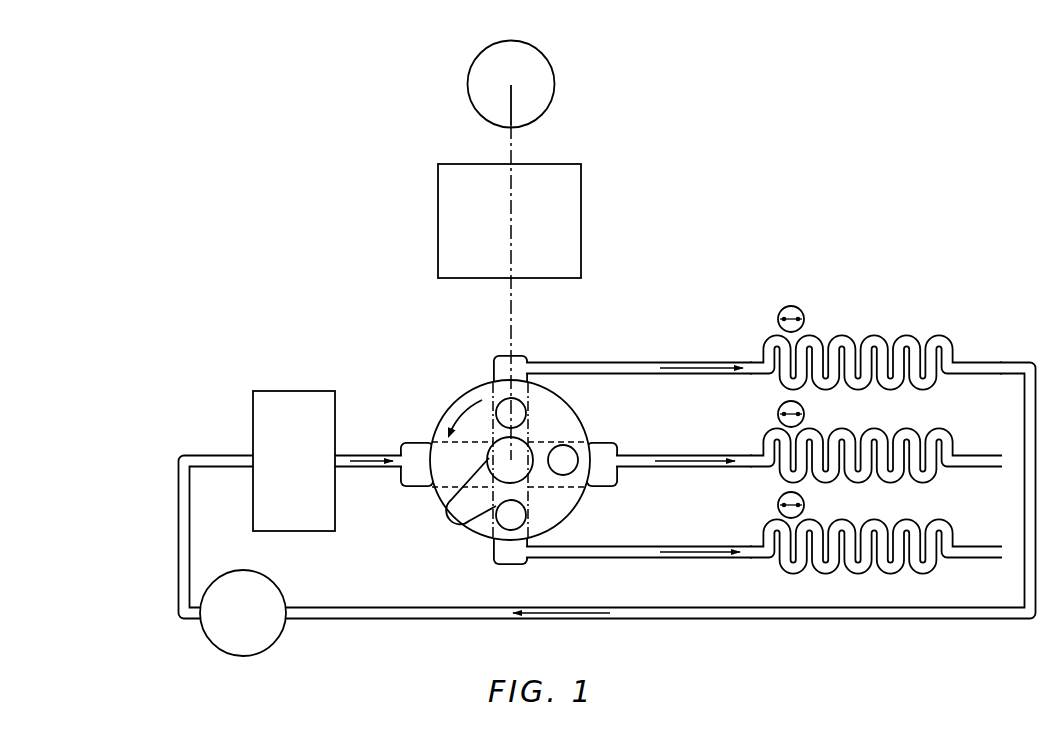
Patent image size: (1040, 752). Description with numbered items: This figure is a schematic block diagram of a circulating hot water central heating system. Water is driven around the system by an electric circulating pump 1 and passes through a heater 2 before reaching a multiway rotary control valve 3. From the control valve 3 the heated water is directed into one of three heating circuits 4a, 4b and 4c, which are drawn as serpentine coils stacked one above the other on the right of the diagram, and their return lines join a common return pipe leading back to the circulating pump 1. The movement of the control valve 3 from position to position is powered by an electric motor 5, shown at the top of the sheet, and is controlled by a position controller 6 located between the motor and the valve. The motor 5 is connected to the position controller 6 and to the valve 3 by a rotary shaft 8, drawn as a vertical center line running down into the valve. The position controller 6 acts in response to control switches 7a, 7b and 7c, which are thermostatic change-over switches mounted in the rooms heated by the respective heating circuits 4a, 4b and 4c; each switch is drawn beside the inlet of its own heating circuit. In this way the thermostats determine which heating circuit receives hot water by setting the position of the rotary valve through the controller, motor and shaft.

The electric circulating pump 1 is at (215, 637).
The heater 2 is at (304, 398).
The multiway rotary control valve 3 is at (443, 492).
The heating circuit 4a is at (923, 540).
The heating circuit 4b is at (923, 447).
The heating circuit 4c is at (923, 355).
The electric motor 5 is at (538, 70).
The position controller 6 is at (572, 223).
The control switch 7a is at (780, 499).
The control switch 7b is at (780, 406).
The control switch 7c is at (780, 312).
The rotary shaft 8 is at (513, 147).